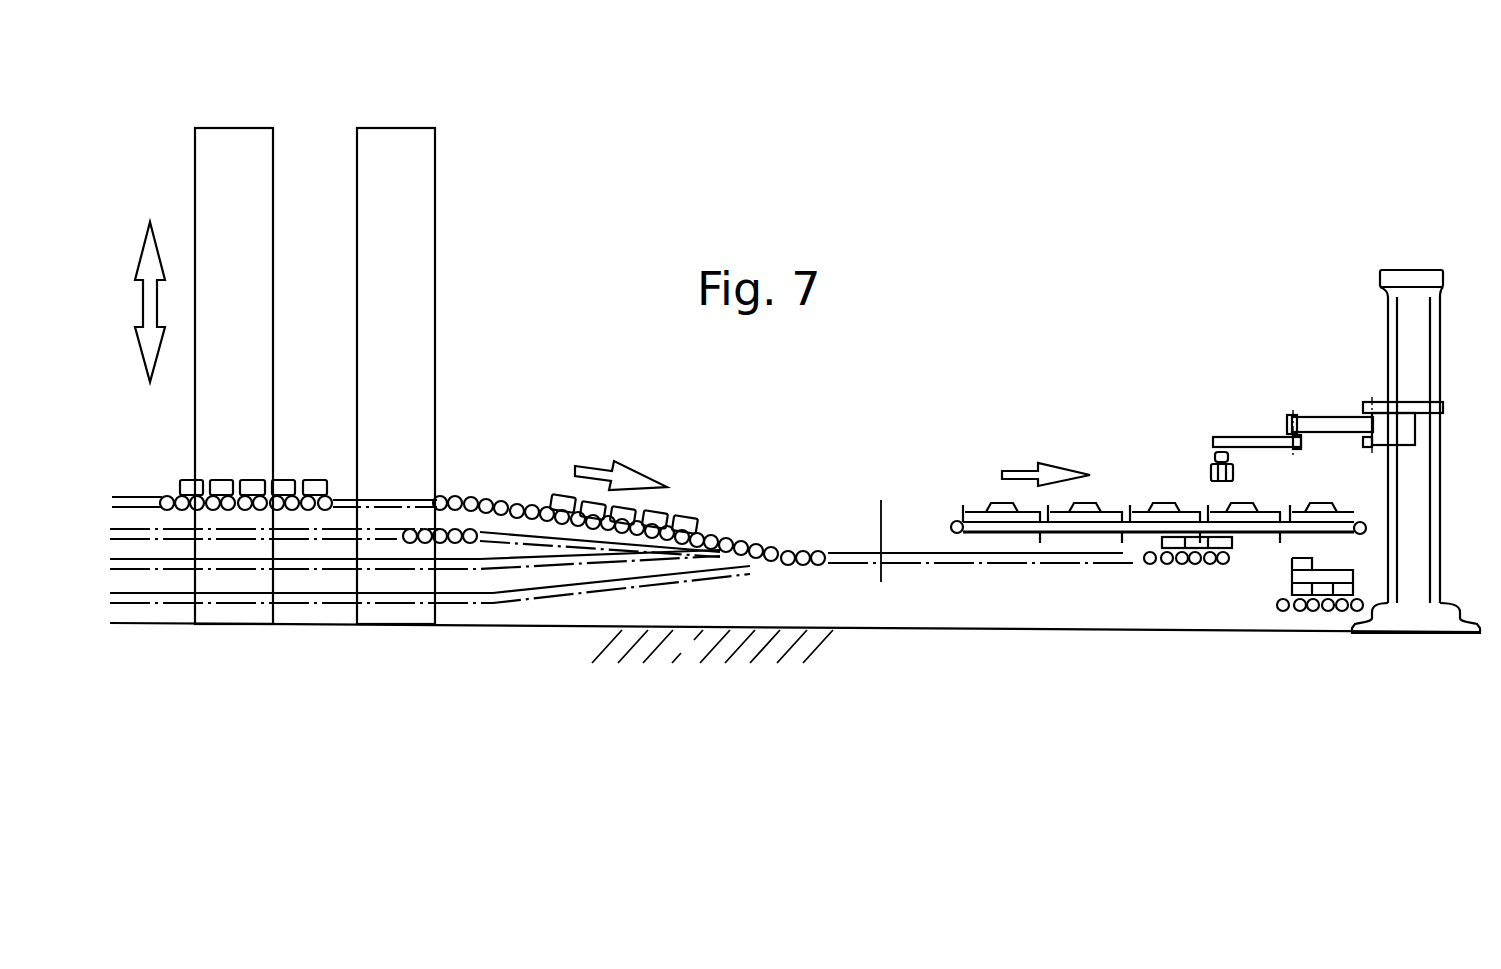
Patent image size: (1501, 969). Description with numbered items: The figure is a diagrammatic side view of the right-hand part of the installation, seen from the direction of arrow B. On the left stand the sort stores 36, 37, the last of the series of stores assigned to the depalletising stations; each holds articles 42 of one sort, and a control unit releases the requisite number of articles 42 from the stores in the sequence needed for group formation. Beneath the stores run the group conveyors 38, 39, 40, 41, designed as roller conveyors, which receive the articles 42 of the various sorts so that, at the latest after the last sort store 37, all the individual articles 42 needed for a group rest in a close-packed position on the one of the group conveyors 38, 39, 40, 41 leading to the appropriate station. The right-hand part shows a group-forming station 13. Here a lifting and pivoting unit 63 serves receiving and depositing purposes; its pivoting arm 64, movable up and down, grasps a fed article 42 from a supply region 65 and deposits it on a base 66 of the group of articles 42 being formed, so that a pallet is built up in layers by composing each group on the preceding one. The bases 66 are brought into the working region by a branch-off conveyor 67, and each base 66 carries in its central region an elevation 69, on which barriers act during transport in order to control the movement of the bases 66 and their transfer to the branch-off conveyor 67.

The group-forming station 13 is at (1179, 343).
The sort store 36 is at (235, 140).
The sort store 37 is at (397, 145).
The group conveyor 38 is at (481, 498).
The group conveyor 39 is at (478, 537).
The group conveyor 40 is at (463, 562).
The group conveyor 41 is at (461, 598).
The article 42 is at (1211, 472).
The lifting and pivoting unit 63 is at (1382, 367).
The pivoting arm 64 is at (1310, 415).
The supply region 65 is at (1182, 564).
The base 66 is at (1060, 510).
The branch-off conveyor 67 is at (1005, 533).
The elevation 69 is at (993, 503).